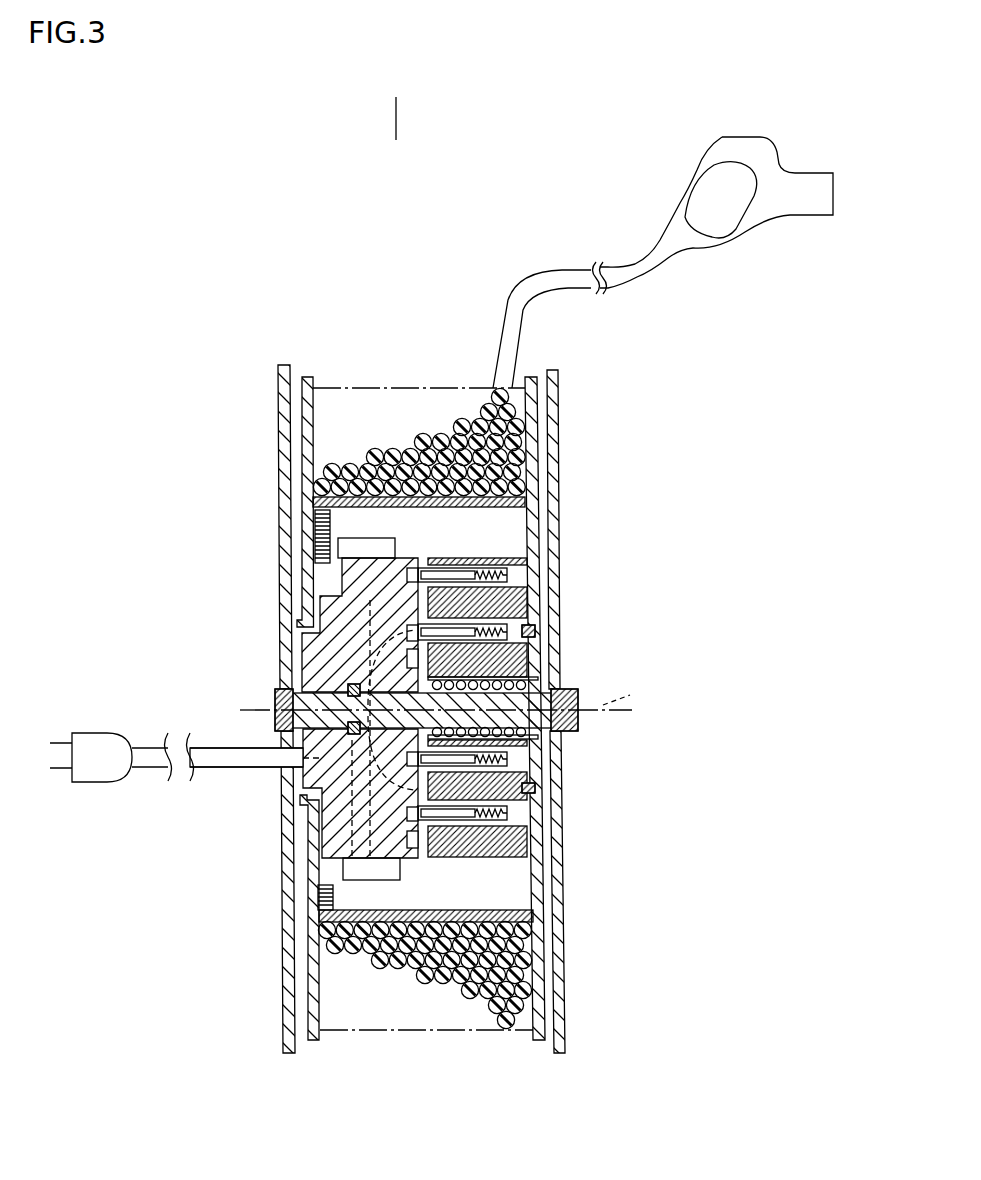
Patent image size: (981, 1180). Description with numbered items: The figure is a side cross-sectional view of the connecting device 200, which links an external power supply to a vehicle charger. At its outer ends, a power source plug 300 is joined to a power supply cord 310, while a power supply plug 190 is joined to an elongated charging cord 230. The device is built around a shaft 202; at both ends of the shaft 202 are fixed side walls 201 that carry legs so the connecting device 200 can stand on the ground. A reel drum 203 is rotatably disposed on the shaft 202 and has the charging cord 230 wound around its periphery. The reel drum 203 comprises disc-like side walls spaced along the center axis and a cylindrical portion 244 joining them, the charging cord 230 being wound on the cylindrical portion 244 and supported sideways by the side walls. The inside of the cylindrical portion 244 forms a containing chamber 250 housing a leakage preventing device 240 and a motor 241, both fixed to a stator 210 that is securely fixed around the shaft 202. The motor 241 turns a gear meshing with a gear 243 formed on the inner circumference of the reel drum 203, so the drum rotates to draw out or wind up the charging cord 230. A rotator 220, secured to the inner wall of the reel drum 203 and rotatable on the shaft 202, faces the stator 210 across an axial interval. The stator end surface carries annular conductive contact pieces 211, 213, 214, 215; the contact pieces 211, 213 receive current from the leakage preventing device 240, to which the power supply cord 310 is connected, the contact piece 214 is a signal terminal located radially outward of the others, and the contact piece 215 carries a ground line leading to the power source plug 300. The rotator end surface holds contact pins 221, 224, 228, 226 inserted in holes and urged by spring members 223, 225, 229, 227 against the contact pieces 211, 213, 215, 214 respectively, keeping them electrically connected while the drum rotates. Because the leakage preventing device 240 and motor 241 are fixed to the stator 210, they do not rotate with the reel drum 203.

The power supply plug 190 is at (797, 142).
The connecting device 200 is at (396, 140).
The side walls 201 is at (283, 442).
The shaft 202 is at (566, 719).
The reel drum 203 is at (531, 455).
The stator 210 is at (305, 658).
The contact piece 211 is at (535, 634).
The contact piece 213 is at (490, 790).
The contact piece 214 is at (420, 846).
The contact piece 215 is at (462, 856).
The rotator 220 is at (476, 661).
The contact pin 221 is at (482, 745).
The spring member 223 is at (482, 761).
The contact pin 224 is at (476, 600).
The spring member 225 is at (472, 632).
The contact pin 226 is at (442, 572).
The spring member 227 is at (472, 561).
The contact pin 228 is at (472, 840).
The spring member 229 is at (472, 815).
The charging cord 230 is at (510, 326).
The leakage preventing device 240 is at (352, 871).
The motor 241 is at (366, 538).
The gear 243 is at (316, 523).
The cylindrical portion 244 is at (484, 504).
The containing chamber 250 is at (447, 553).
The power source plug 300 is at (101, 772).
The power supply cord 310 is at (212, 766).